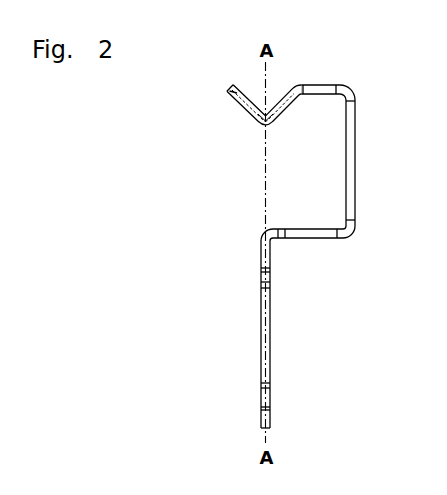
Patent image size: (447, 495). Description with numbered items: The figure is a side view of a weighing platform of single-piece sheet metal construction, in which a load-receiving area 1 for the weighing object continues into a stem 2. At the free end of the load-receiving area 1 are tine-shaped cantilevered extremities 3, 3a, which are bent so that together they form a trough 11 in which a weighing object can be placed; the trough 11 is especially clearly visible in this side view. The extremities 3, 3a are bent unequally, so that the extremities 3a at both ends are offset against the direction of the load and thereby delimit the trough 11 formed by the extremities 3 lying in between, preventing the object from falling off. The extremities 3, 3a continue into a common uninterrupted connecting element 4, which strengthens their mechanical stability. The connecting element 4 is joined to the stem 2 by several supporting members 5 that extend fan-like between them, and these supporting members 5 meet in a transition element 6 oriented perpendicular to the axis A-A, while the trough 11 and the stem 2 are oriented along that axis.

The load-receiving area 1 is at (280, 232).
The stem 2 is at (232, 315).
The extremities 3 is at (223, 95).
The extremities at both ends 3a is at (229, 90).
The connecting element 4 is at (322, 88).
The supporting members 5 is at (350, 163).
The transition element 6 is at (312, 232).
The trough 11 is at (259, 86).